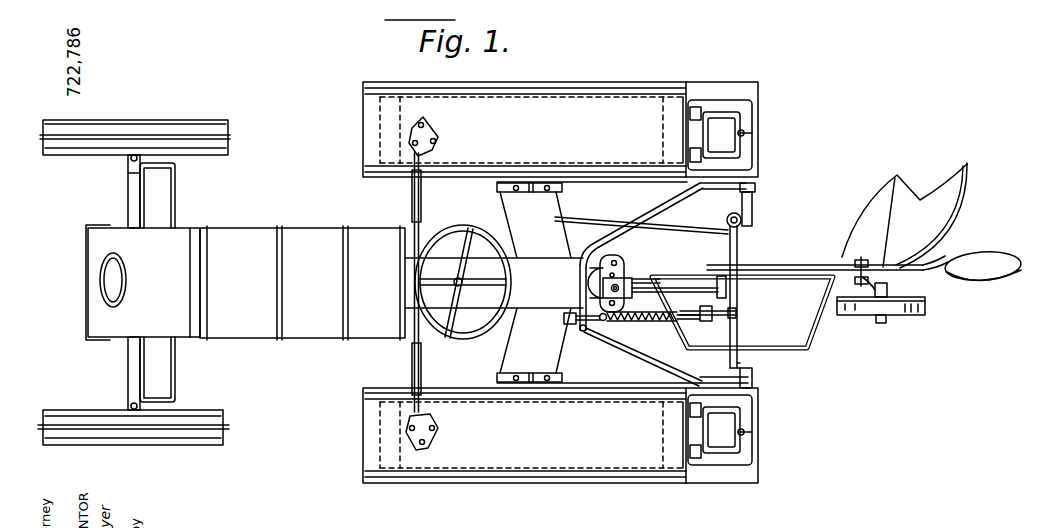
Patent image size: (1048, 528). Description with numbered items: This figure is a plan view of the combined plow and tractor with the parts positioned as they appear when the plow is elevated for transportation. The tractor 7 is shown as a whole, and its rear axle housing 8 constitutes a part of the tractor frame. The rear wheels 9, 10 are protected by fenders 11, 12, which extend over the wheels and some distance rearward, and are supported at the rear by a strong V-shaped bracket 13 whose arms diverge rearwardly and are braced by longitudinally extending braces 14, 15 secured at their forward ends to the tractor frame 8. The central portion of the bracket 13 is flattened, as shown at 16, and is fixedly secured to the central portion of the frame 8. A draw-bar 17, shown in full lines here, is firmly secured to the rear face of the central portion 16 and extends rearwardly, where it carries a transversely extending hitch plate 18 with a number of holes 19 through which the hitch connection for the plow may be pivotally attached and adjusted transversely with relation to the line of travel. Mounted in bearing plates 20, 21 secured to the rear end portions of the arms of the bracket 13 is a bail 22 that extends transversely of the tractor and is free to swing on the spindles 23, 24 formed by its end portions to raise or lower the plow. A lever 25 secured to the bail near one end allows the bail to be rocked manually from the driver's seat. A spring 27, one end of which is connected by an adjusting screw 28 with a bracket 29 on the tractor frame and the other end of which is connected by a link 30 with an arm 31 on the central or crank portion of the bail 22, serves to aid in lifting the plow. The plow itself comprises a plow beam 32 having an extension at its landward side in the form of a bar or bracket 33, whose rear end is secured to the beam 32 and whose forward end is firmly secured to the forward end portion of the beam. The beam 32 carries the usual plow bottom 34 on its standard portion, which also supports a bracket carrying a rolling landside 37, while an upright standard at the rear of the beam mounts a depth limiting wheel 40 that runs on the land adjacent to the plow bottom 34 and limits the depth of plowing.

The tractor 7 is at (287, 238).
The rear axle housing 8 is at (520, 222).
The rear wheel 9 is at (565, 455).
The rear wheel 10 is at (582, 112).
The fender 11 is at (627, 455).
The fender 12 is at (607, 118).
The V-shaped bracket 13 is at (658, 213).
The longitudinally extending brace 14 is at (586, 384).
The longitudinally extending brace 15 is at (593, 182).
The flattened central portion 16 is at (583, 266).
The draw-bar 17 is at (615, 262).
The hitch plate 18 is at (624, 279).
The holes 19 is at (628, 321).
The bearing plate 20 is at (715, 380).
The bearing plate 21 is at (718, 194).
The bail 22 is at (736, 256).
The spindle 23 is at (752, 376).
The spindle 24 is at (753, 212).
The lever 25 is at (641, 235).
The spring 27 is at (660, 340).
The adjusting screw 28 is at (571, 328).
The bracket 29 is at (588, 330).
The link 30 is at (700, 311).
The arm 31 is at (720, 318).
The plow beam 32 is at (790, 265).
The bar or bracket 33 is at (807, 322).
The plow bottom 34 is at (880, 228).
The rolling landside 37 is at (972, 272).
The depth limiting wheel 40 is at (902, 306).